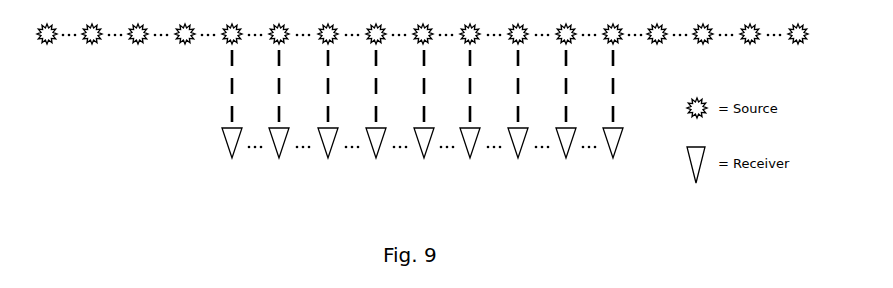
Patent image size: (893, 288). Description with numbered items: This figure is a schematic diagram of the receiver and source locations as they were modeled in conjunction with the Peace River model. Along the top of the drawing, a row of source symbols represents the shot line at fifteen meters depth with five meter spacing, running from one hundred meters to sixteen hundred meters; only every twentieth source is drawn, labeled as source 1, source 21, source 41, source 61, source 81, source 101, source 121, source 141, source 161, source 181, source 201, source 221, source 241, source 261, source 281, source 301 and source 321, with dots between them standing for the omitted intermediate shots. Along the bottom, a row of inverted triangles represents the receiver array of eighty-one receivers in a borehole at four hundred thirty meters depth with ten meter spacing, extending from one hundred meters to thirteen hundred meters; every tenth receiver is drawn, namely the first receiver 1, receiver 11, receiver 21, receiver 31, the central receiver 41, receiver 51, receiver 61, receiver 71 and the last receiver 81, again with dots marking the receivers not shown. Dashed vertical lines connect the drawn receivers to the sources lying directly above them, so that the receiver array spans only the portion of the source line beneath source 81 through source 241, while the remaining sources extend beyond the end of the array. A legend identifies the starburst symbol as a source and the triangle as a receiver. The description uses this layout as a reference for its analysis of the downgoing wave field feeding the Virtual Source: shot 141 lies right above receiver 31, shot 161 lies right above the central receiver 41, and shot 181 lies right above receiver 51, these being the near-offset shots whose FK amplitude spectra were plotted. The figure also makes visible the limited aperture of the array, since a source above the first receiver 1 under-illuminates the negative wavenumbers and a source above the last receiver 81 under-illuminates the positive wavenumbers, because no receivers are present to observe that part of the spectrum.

The first receiver 1 is at (139, 95).
The source location 21 is at (210, 95).
The central receiver 41 is at (281, 95).
The source location 61 is at (352, 95).
The last receiver 81 is at (423, 95).
The source location 101 is at (279, 27).
The source location 121 is at (328, 27).
The shot 141 is at (376, 27).
The shot 161 is at (423, 27).
The shot 181 is at (470, 27).
The source location 201 is at (518, 27).
The source location 221 is at (566, 27).
The source location 241 is at (613, 27).
The source location 261 is at (657, 27).
The source location 281 is at (703, 27).
The source location 301 is at (750, 27).
The source location 321 is at (798, 27).
The receiver 11 is at (279, 115).
The receiver 31 is at (376, 115).
The receiver 51 is at (470, 115).
The receiver 71 is at (566, 115).